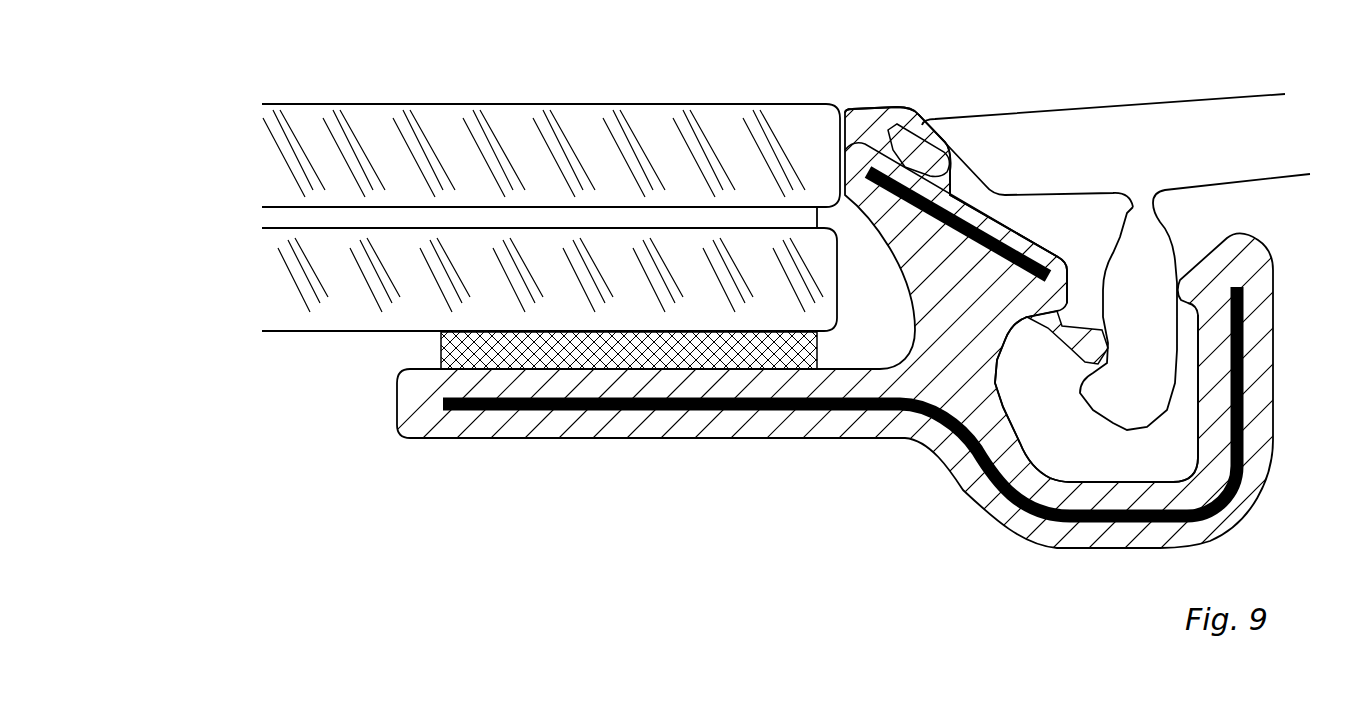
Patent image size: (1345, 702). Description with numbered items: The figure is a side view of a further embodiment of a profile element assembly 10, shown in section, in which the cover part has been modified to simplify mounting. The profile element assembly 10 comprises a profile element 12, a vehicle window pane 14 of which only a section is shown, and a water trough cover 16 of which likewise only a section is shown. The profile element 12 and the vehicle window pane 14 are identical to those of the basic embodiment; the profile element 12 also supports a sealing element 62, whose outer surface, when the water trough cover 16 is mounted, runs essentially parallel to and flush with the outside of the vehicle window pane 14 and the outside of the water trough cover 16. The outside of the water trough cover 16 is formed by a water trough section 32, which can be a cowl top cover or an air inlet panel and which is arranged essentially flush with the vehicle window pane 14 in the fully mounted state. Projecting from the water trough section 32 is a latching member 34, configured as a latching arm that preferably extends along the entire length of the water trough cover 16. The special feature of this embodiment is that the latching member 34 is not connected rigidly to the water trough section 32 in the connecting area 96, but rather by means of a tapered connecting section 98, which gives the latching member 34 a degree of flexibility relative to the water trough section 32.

The profile element assembly 10 is at (583, 547).
The profile element 12 is at (886, 468).
The vehicle window pane 14 is at (640, 86).
The water trough cover 16 is at (1146, 76).
The water trough section 32 is at (1068, 171).
The latching member 34 is at (1097, 435).
The sealing element 62 is at (898, 88).
The connecting area 96 is at (1168, 207).
The tapered connecting section 98 is at (1118, 212).